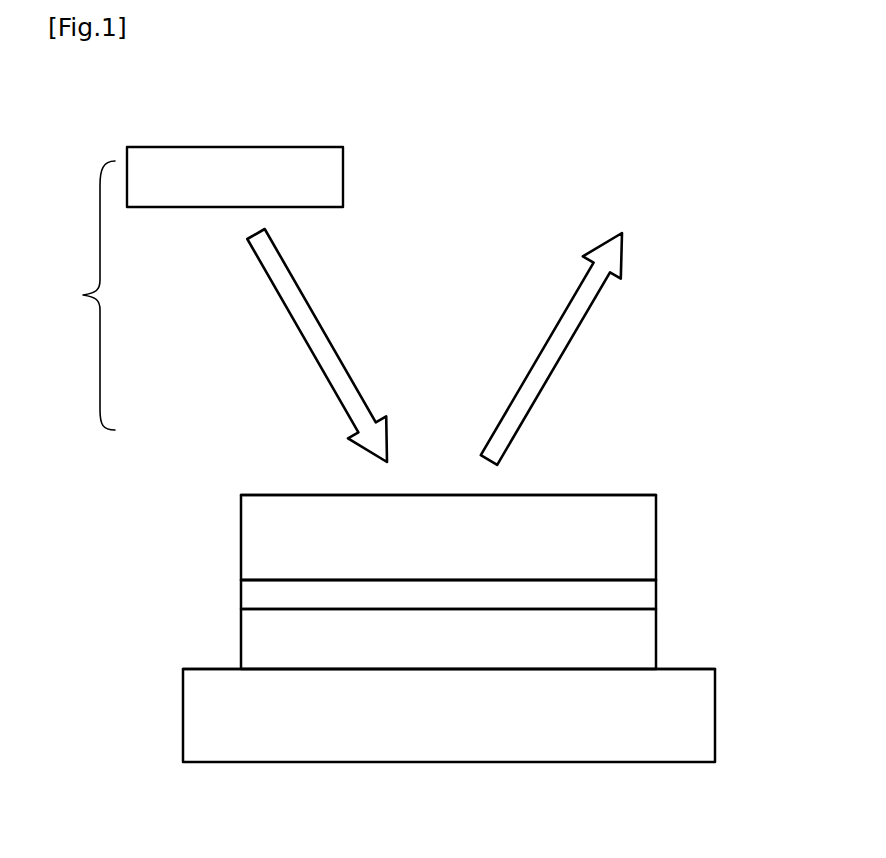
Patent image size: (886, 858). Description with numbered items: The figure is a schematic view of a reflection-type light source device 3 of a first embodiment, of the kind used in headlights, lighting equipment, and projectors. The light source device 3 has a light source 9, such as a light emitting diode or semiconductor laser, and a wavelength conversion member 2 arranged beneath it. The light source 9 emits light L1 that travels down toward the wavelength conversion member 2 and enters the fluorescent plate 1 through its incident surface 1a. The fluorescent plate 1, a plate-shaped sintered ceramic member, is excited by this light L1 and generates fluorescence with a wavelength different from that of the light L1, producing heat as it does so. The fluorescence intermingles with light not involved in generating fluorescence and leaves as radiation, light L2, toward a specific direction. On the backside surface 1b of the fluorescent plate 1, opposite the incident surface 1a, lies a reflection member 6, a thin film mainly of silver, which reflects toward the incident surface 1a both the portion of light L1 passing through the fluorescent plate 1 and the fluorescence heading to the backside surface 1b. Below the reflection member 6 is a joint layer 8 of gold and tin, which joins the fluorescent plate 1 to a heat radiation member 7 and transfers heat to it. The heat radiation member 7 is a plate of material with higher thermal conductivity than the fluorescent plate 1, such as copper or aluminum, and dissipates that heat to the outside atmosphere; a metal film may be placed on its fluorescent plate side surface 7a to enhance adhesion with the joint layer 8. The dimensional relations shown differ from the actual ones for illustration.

The fluorescent plate 1 is at (640, 537).
The incident surface 1a is at (599, 494).
The backside surface 1b is at (607, 582).
The wavelength conversion member 2 is at (413, 535).
The light source device 3 is at (90, 295).
The reflection member 6 is at (640, 602).
The heat radiation member 7 is at (697, 716).
The fluorescent plate side surface 7a is at (546, 669).
The joint layer 8 is at (640, 641).
The light source 9 is at (330, 157).
The light L1 is at (330, 355).
The light L2 is at (545, 358).